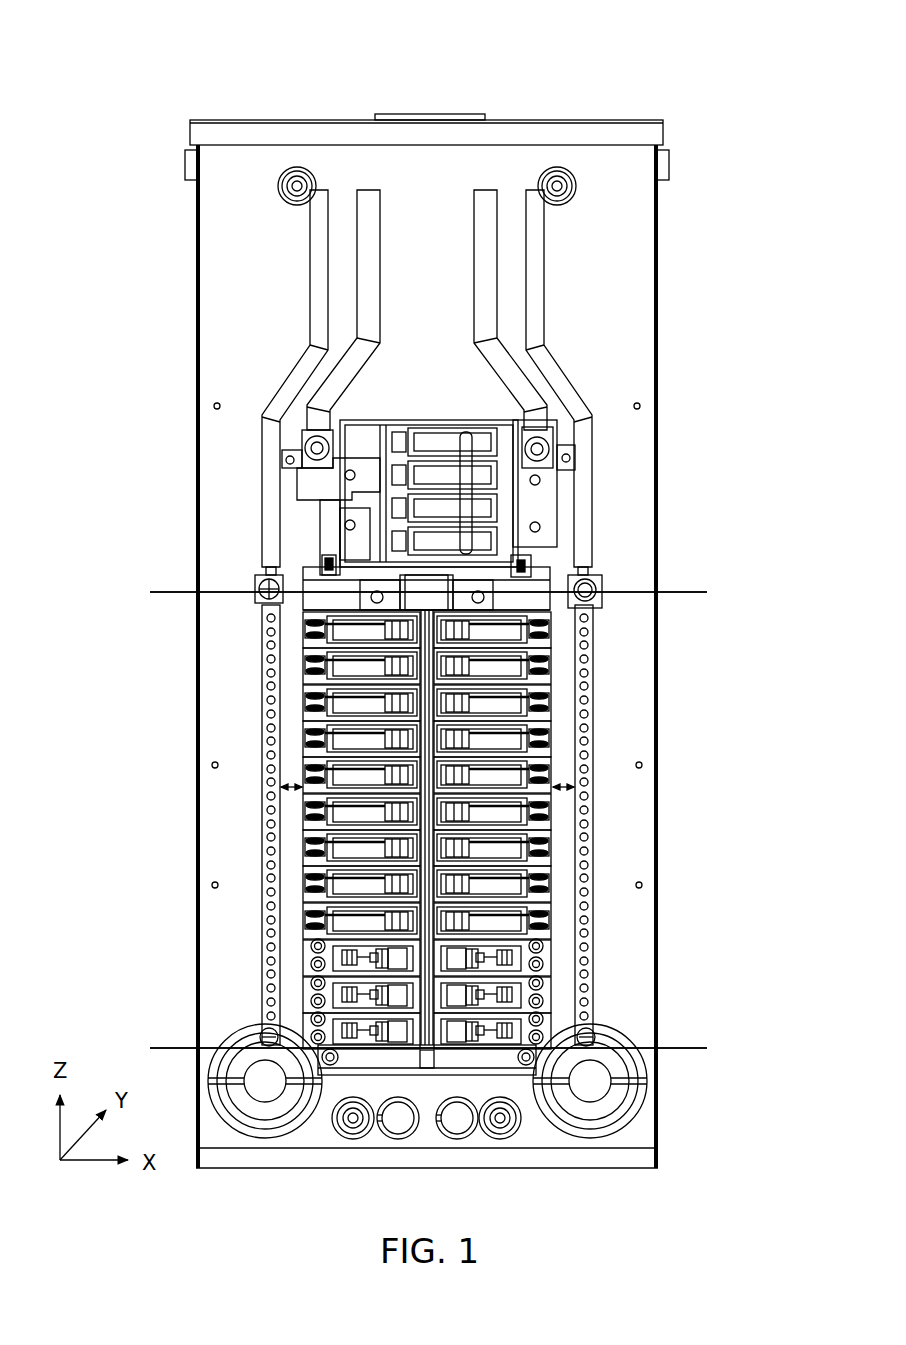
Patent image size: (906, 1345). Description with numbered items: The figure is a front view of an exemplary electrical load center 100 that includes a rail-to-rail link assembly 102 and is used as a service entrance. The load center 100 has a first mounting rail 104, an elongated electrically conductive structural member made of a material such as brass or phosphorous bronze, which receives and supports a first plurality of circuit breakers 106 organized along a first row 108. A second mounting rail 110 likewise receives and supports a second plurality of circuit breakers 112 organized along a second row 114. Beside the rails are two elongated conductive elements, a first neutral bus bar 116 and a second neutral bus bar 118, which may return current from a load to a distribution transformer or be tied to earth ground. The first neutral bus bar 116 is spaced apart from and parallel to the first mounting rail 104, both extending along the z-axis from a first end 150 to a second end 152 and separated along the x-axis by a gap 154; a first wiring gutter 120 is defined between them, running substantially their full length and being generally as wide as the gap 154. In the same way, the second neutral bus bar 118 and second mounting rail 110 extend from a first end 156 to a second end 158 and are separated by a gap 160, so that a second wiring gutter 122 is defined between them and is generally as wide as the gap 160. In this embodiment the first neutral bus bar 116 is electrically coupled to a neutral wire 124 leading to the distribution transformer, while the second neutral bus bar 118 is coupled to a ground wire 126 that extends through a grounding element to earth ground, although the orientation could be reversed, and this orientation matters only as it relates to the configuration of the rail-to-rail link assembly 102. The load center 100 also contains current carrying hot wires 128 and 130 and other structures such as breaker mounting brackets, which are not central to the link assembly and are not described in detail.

The load center 100 is at (193, 73).
The rail-to-rail link assembly 102 is at (427, 1084).
The first mounting rail 104 is at (255, 600).
The first plurality of circuit breakers 106 is at (330, 981).
The first row 108 is at (365, 1037).
The second mounting rail 110 is at (600, 601).
The second plurality of circuit breakers 112 is at (524, 981).
The second row 114 is at (492, 1027).
The first neutral bus bar 116 is at (268, 659).
The second neutral bus bar 118 is at (597, 632).
The first wiring gutter 120 is at (298, 694).
The second wiring gutter 122 is at (560, 722).
The neutral wire 124 is at (532, 189).
The ground wire 126 is at (320, 189).
The hot wire 128 is at (368, 189).
The hot wire 130 is at (485, 189).
The first end 150 is at (150, 586).
The second end 152 is at (160, 1048).
The gap 154 is at (291, 792).
The first end 156 is at (687, 592).
The second end 158 is at (690, 1048).
The gap 160 is at (563, 792).